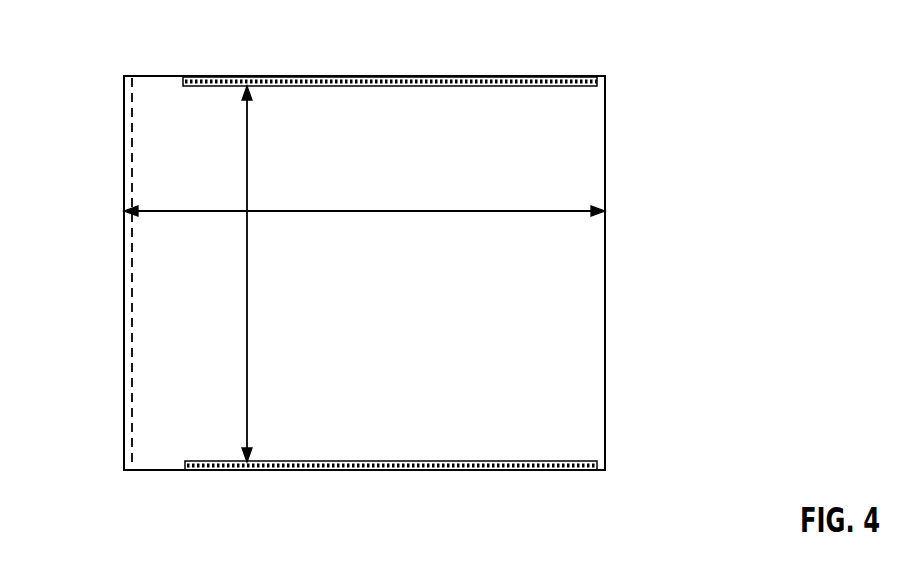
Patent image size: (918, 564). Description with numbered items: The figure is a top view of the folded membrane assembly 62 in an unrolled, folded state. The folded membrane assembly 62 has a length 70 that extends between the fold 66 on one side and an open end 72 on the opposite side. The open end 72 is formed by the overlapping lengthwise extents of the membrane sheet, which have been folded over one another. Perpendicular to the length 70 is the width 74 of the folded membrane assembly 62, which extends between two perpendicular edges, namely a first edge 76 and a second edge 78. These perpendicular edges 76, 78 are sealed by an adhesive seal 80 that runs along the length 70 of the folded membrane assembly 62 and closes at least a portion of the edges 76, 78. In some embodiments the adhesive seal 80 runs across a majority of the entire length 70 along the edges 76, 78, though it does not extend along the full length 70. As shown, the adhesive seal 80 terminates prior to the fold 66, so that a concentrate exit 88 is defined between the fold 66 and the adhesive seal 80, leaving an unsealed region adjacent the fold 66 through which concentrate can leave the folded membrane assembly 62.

The folded membrane assembly 62 is at (686, 222).
The fold 66 is at (122, 165).
The length 70 is at (157, 210).
The open end 72 is at (612, 373).
The width 74 is at (248, 381).
The first edge 76 is at (303, 470).
The second edge 78 is at (300, 76).
The adhesive seal 80 is at (520, 76).
The concentrate exit 88 is at (145, 80).